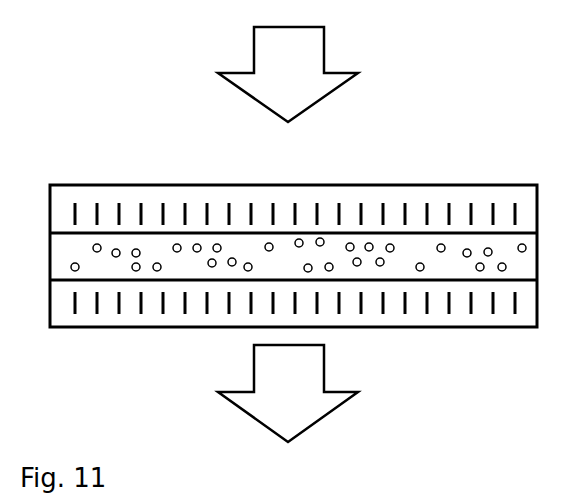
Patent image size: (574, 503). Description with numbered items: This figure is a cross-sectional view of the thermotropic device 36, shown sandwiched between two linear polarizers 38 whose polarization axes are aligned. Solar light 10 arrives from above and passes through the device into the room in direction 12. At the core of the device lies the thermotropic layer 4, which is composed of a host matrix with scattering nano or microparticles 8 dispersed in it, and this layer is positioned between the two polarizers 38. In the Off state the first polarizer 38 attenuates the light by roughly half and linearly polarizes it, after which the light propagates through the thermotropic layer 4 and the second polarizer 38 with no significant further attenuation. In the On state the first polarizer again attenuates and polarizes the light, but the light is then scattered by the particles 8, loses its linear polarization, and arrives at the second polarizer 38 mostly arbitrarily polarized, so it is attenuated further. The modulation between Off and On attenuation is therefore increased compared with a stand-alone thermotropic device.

The thermotropic layer 4 is at (413, 245).
The scattering nano or microparticles 8 is at (445, 243).
The solar light 10 is at (288, 74).
The direction 12 is at (288, 393).
The thermotropic device 36 is at (415, 135).
The linear polarizers 38 is at (124, 223).